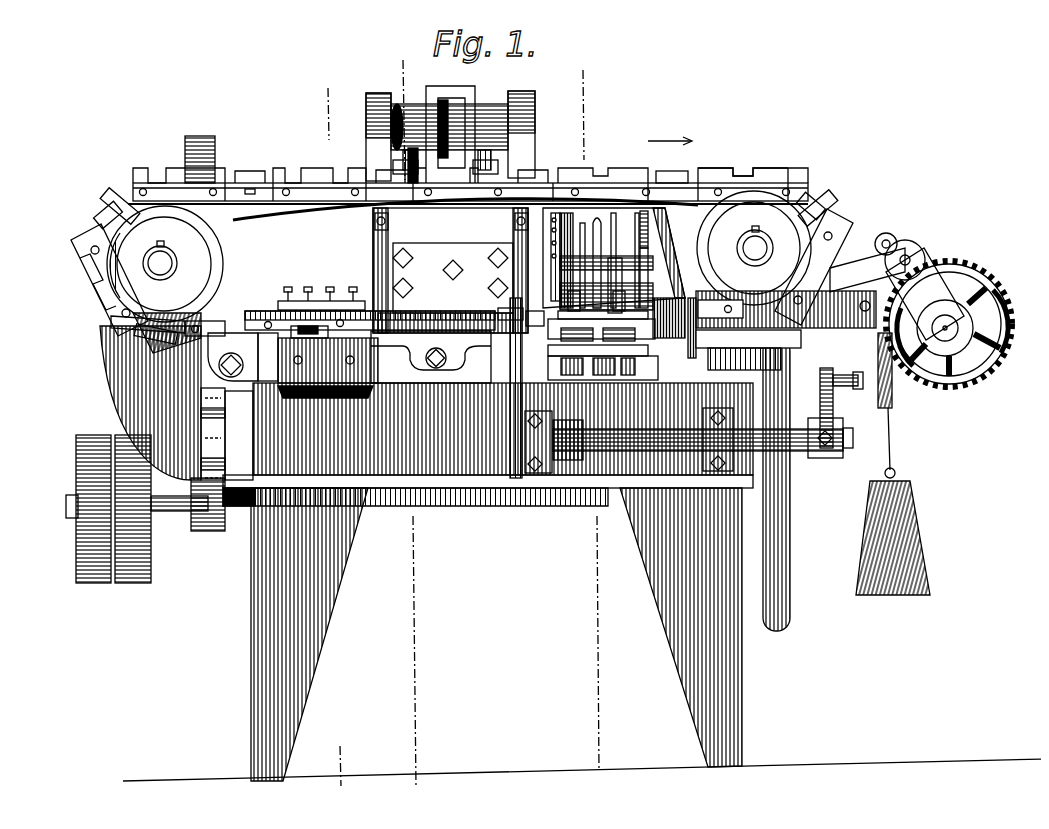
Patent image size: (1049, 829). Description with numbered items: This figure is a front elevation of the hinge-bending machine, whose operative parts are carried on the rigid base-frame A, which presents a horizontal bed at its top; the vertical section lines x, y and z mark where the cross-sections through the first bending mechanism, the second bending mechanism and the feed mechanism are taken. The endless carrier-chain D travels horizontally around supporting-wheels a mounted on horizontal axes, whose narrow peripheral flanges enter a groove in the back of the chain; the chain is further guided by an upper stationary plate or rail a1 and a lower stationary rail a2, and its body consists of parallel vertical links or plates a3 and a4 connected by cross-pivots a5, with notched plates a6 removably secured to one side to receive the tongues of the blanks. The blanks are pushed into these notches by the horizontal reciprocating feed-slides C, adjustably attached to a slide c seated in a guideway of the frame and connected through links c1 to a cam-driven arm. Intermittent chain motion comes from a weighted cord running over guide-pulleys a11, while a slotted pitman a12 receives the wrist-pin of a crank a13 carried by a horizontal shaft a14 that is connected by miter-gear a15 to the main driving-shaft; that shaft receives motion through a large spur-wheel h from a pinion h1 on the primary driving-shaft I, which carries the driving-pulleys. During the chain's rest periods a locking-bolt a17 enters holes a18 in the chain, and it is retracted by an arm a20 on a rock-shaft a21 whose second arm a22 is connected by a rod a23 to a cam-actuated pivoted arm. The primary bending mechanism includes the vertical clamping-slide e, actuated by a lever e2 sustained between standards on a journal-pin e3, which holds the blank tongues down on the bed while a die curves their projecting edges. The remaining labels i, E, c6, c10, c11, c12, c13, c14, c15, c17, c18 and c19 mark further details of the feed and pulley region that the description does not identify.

The base-frame A is at (570, 553).
The primary driving-shaft I is at (795, 481).
The pulley i is at (137, 516).
The spur-wheel h is at (192, 128).
The pinion h1 is at (200, 525).
The supporting-wheels a is at (459, 256).
The upper stationary plate or rail a1 is at (305, 190).
The lower stationary rail a2 is at (265, 290).
The links or plates a3 is at (469, 187).
The links or plates a4 is at (308, 166).
The cross-pivots a5 is at (640, 183).
The notched plates a6 is at (740, 172).
The guide-pulleys a11 is at (877, 266).
The pitman a12 is at (890, 230).
The crank a13 is at (243, 178).
The horizontal shaft a14 is at (950, 320).
The miter-gear a15 is at (948, 428).
The locking-bolt a17 is at (505, 330).
The holes a18 is at (90, 210).
The arm a20 is at (500, 380).
The rock-shaft a21 is at (790, 446).
The second arm a22 is at (812, 392).
The rod a23 is at (848, 383).
The slide c is at (563, 360).
The feed-slides C is at (603, 380).
The links c1 is at (450, 270).
The rounded block c6 is at (293, 362).
The frame c10 is at (668, 245).
The rod c11 is at (607, 263).
The slotted plate c12 is at (555, 210).
The rod c13 is at (592, 258).
The plate c14 is at (562, 313).
The block c15 is at (660, 265).
The bracket c17 is at (535, 312).
The bracket c18 is at (669, 323).
The plate c19 is at (782, 330).
The carrier-chain D is at (90, 282).
The rod E is at (603, 272).
The vertical slide e is at (430, 85).
The lever e2 is at (440, 118).
The journal or pivot-pin e3 is at (480, 95).
The section line x x is at (406, 423).
The section line y y is at (332, 438).
The section line z z is at (589, 427).